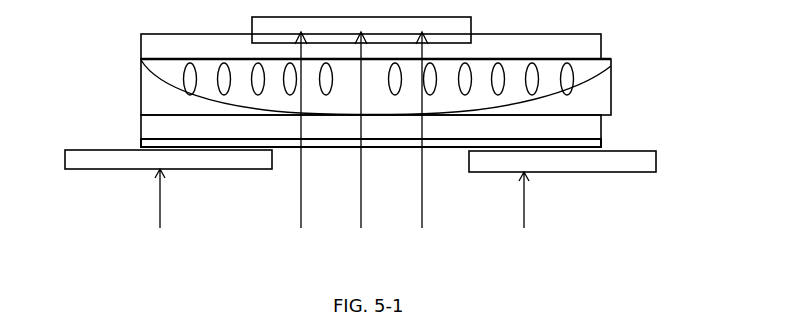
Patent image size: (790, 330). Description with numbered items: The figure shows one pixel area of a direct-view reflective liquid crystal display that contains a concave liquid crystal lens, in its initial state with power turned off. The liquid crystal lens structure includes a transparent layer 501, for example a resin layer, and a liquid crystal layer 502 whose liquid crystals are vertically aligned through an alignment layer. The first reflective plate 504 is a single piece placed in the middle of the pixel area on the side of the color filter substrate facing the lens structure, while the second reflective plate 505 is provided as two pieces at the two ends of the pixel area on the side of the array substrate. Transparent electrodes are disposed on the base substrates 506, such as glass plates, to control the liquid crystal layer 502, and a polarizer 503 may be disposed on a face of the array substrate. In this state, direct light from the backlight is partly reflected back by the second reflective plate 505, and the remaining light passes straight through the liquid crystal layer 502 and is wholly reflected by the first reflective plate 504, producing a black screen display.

The transparent layer 501 is at (152, 101).
The liquid crystal layer 502 is at (170, 73).
The polarizer 503 is at (153, 143).
The first reflective plate 504 is at (265, 37).
The second reflective plate 505 is at (115, 160).
The base substrates 506 is at (593, 43).